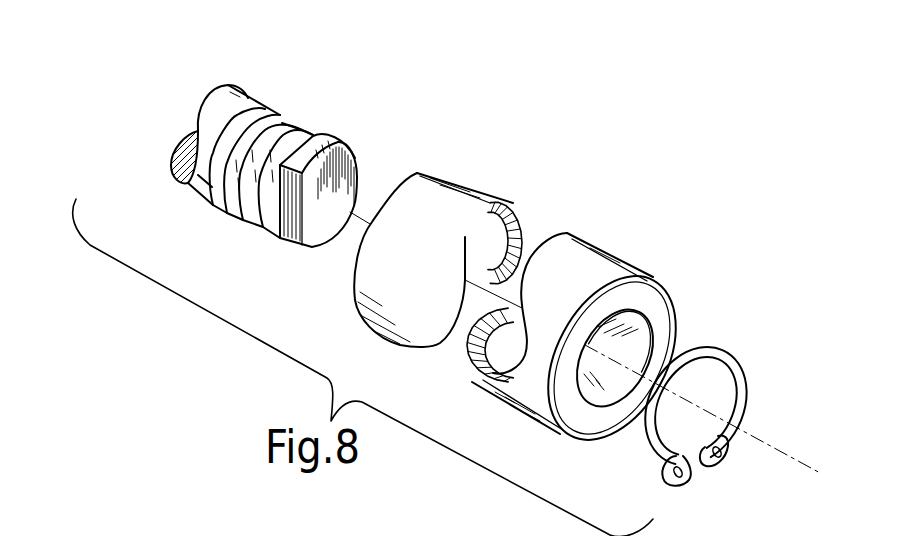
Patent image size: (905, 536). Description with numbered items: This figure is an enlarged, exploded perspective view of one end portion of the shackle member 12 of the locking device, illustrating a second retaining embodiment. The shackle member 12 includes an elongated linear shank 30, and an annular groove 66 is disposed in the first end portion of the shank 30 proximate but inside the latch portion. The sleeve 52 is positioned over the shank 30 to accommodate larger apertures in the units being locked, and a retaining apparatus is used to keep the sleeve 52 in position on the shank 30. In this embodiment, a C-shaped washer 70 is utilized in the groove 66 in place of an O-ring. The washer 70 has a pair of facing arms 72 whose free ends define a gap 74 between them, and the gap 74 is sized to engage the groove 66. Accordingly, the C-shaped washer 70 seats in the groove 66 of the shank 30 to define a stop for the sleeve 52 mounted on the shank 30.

The shackle member 12 is at (239, 144).
The shank 30 is at (203, 132).
The annular groove 66 is at (265, 113).
The sleeve 52 is at (484, 183).
The C-shaped washer 70 is at (696, 414).
The facing arms 72 is at (738, 421).
The gap 74 is at (702, 480).